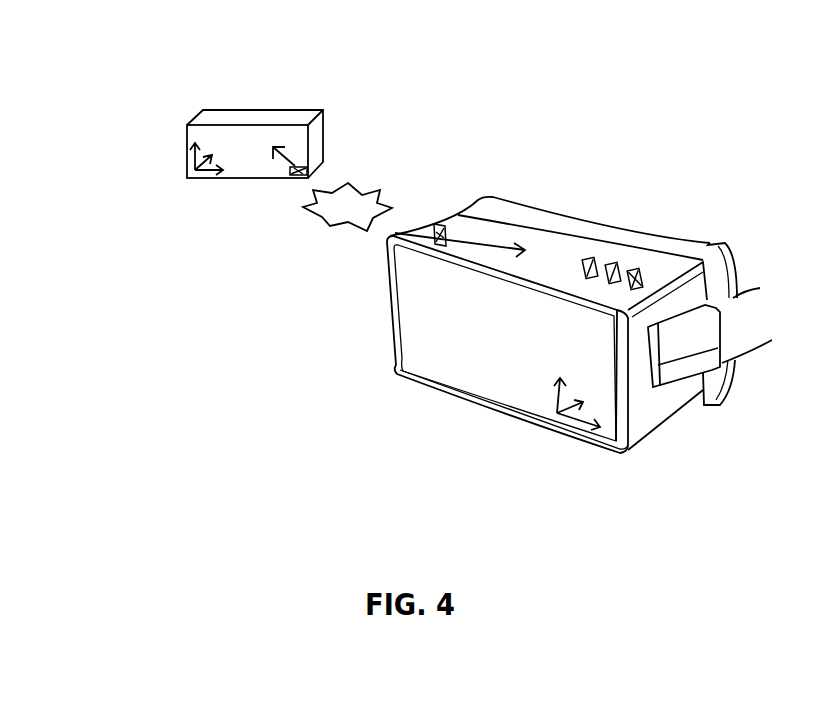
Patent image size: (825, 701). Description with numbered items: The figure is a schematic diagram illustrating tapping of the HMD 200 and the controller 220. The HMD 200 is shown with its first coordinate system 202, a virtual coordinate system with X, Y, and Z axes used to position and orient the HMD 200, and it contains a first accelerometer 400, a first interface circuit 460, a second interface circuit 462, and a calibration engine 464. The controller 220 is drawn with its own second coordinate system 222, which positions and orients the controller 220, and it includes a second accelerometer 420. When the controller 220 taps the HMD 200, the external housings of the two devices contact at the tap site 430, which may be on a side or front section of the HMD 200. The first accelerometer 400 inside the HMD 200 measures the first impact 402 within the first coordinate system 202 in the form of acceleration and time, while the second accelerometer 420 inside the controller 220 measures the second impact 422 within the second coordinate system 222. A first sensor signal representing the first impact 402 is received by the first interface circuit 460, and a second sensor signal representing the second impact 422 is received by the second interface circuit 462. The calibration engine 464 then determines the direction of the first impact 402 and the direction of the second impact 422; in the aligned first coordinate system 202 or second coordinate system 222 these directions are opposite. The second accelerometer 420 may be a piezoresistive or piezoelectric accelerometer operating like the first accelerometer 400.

The HMD 200 is at (463, 356).
The first coordinate system 202 is at (558, 418).
The controller 220 is at (273, 107).
The second coordinate system 222 is at (193, 159).
The first accelerometer 400 is at (442, 225).
The first impact 402 is at (485, 245).
The second accelerometer 420 is at (310, 168).
The second impact 422 is at (280, 154).
The tap site 430 is at (347, 220).
The first interface circuit 460 is at (590, 258).
The second interface circuit 462 is at (614, 263).
The calibration engine 464 is at (639, 270).